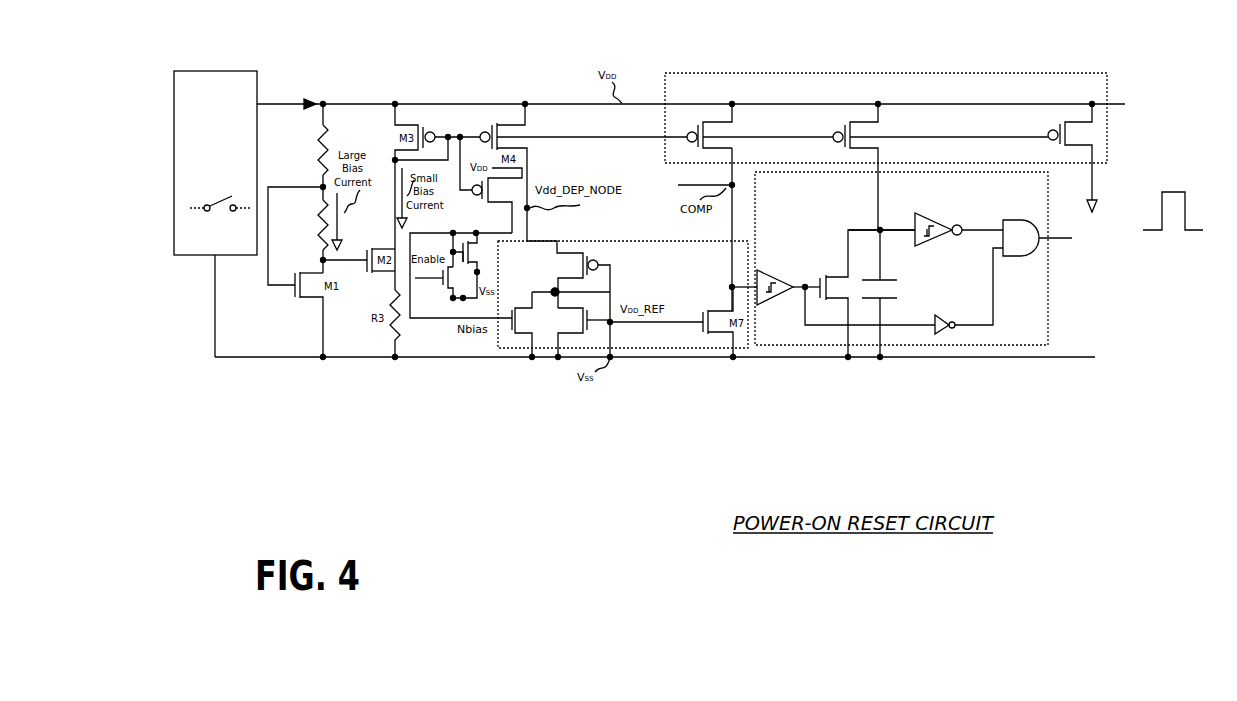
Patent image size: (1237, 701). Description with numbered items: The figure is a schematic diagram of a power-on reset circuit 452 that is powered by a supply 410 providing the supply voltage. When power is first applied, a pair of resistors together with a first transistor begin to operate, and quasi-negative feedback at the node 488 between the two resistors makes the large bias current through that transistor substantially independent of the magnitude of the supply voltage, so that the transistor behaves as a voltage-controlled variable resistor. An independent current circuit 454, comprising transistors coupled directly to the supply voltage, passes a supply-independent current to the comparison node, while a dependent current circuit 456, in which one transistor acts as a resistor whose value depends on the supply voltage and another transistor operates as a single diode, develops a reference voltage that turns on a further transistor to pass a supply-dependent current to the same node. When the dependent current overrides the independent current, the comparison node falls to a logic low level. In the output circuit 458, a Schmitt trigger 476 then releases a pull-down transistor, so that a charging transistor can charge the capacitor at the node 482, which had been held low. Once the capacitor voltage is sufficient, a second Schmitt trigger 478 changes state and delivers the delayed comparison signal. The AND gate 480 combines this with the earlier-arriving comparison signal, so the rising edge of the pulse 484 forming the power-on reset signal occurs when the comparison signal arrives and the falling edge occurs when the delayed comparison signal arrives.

The supply 410 is at (215, 214).
The node between resistors R1 and R2 488 is at (310, 185).
The power-on reset circuit 452 is at (920, 42).
The independent current circuit 454 is at (700, 61).
The dependent current circuit 456 is at (648, 240).
The output circuit 458 is at (1048, 310).
The Schmitt trigger 476 is at (782, 268).
The Schmitt trigger 478 is at (914, 214).
The AND gate 480 is at (1041, 198).
The node between transistor M11 and capacitor C1 482 is at (884, 233).
The pulse 484 is at (1176, 192).